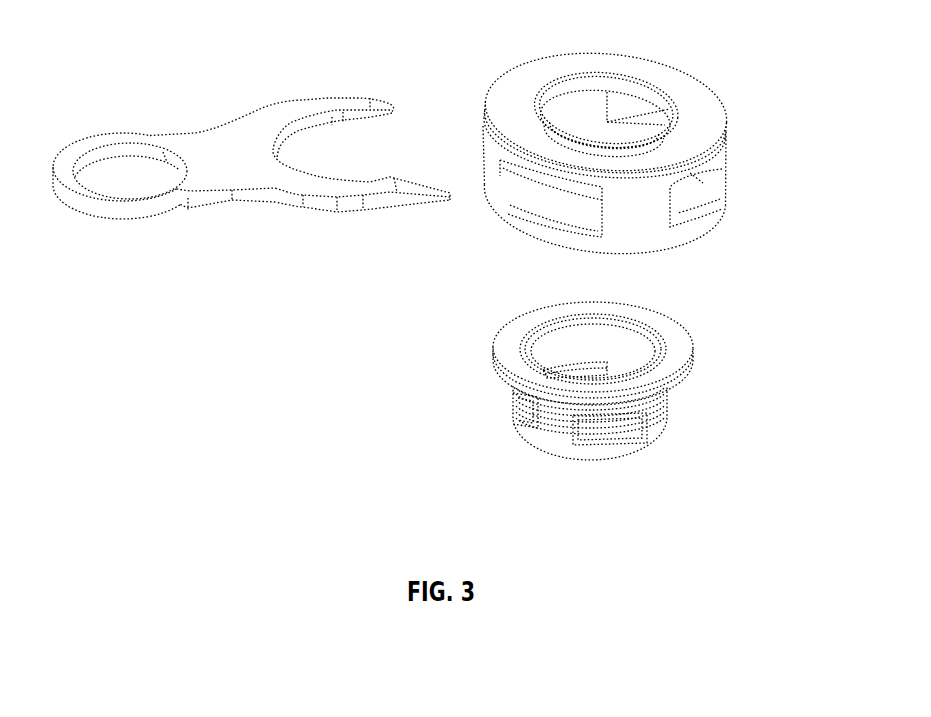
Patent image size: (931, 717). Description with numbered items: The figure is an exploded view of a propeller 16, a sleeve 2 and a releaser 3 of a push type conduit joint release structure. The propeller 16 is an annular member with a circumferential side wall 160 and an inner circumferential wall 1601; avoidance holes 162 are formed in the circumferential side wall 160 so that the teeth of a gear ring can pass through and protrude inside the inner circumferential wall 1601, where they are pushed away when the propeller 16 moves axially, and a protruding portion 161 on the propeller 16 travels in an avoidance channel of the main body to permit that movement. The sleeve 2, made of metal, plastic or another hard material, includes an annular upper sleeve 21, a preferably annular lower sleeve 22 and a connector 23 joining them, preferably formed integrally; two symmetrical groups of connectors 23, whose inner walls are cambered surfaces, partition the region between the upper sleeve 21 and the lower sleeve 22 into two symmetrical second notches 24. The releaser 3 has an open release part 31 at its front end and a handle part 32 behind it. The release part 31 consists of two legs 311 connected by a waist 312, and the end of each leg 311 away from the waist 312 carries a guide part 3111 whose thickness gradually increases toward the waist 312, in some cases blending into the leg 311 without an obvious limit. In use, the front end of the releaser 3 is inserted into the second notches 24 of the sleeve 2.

The releaser 3 is at (228, 227).
The release part 31 is at (340, 213).
The leg 311 is at (310, 120).
The guide part 3111 is at (370, 98).
The waist 312 is at (263, 163).
The handle part 32 is at (113, 134).
The sleeve 2 is at (807, 90).
The upper sleeve 21 is at (703, 98).
The lower sleeve 22 is at (710, 197).
The connector 23 is at (657, 207).
The second notch 24 is at (703, 173).
The propeller 16 is at (670, 340).
The circumferential side wall 160 is at (498, 405).
The inner circumferential wall 1601 is at (557, 342).
The protruding portion 161 is at (560, 420).
The avoidance hole 162 is at (583, 352).